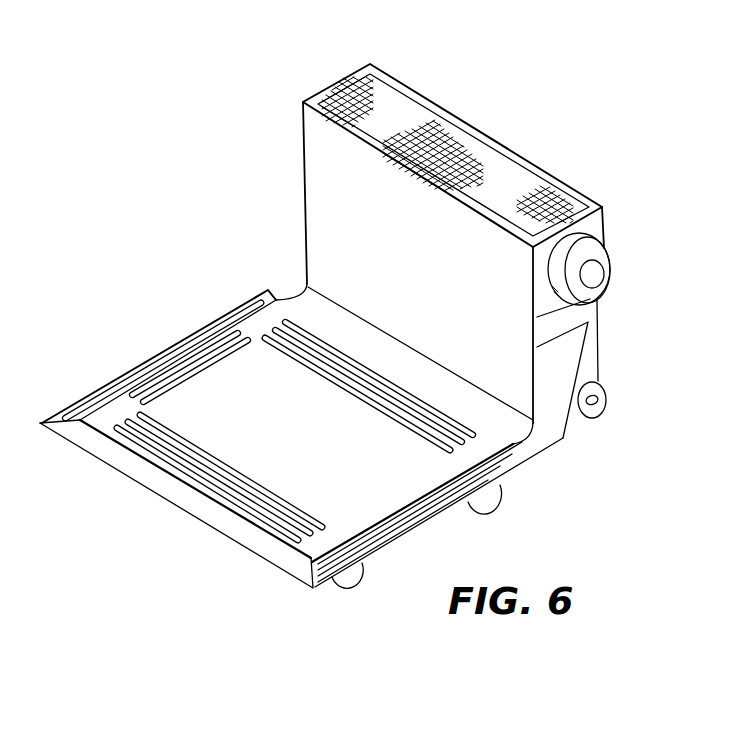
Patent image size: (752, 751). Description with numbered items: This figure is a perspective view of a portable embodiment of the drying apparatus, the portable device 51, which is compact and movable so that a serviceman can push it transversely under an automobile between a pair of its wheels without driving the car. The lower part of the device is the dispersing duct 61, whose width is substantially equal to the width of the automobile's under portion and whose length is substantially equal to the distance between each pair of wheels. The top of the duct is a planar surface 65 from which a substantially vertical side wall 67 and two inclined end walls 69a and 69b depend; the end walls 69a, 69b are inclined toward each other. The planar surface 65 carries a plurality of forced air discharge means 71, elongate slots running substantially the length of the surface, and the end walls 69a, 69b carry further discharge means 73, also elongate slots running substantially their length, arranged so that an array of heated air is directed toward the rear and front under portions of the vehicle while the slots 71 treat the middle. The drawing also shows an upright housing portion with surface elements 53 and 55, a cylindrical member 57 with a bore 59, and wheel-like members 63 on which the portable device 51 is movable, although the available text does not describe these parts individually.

The portable device 51 is at (433, 284).
The abrasive cross-hatched pads 53 is at (453, 167).
The top panel 55 is at (417, 110).
The cylindrical spool hub 57 is at (600, 273).
The hub bore 59 is at (619, 278).
The dispersing duct 61 is at (268, 417).
The rollers 63 is at (352, 588).
The planar surface 65 is at (371, 462).
The side wall 67 is at (253, 535).
The inclined end wall 69a is at (420, 508).
The inclined end wall 69b is at (178, 350).
The forced air discharge means 71 is at (162, 453).
The discharge means 73 is at (445, 492).